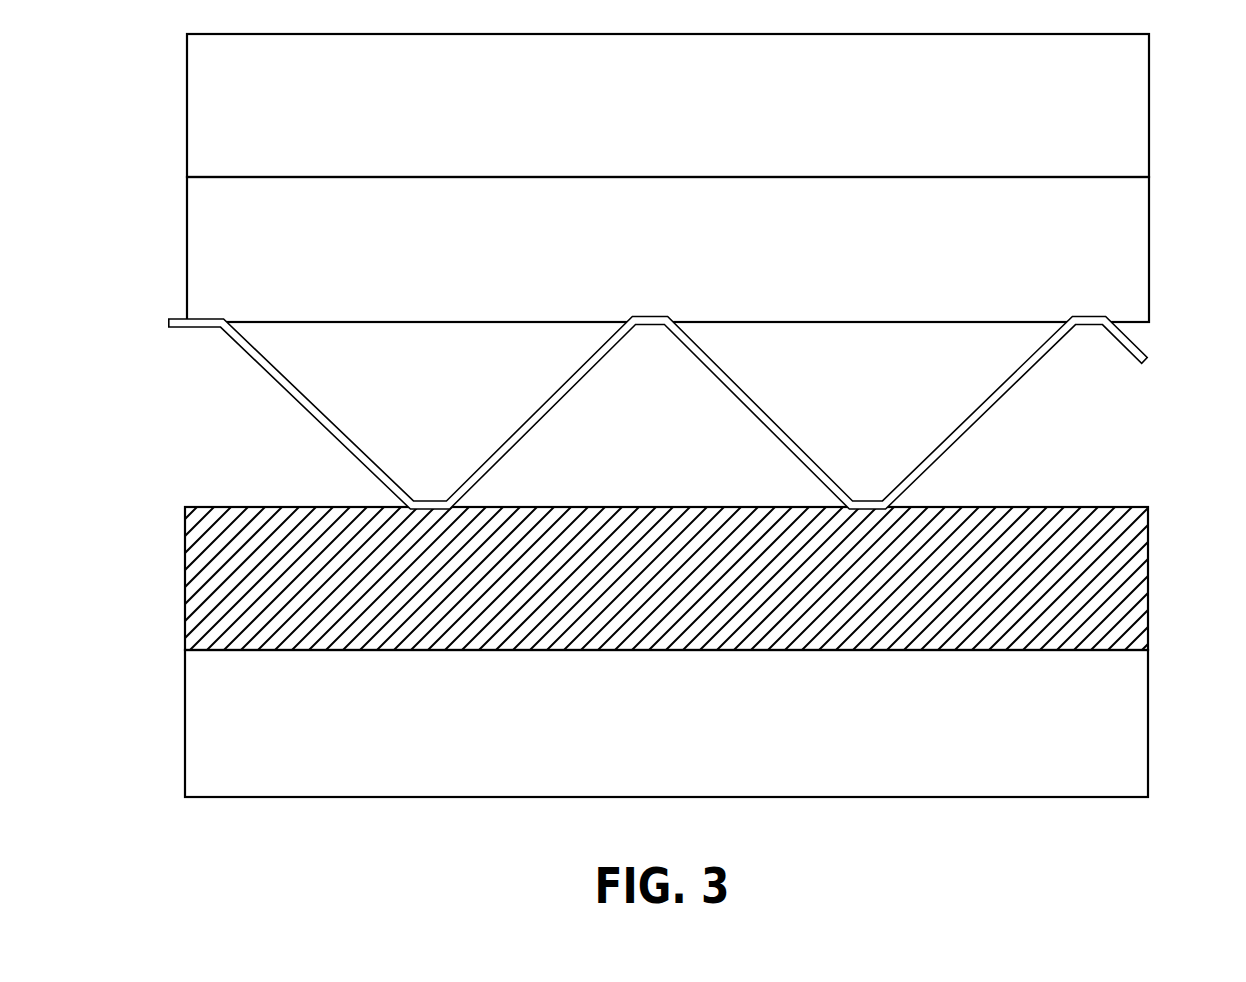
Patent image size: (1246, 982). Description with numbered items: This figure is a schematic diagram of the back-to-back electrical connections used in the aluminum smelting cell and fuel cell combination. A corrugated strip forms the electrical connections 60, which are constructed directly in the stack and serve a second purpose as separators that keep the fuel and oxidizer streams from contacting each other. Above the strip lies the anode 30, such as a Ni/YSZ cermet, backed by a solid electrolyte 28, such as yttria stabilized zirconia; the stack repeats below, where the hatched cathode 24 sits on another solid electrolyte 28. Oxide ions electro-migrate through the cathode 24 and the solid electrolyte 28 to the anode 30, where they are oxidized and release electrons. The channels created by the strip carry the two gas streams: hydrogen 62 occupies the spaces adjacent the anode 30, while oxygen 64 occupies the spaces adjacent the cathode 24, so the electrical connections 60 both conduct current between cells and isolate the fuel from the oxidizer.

The solid electrolyte 28 is at (628, 130).
The anode 30 is at (663, 260).
The cathode 24 is at (628, 594).
The electrical connections 60 is at (1157, 362).
The hydrogen 62 is at (411, 382).
The oxygen 64 is at (220, 470).